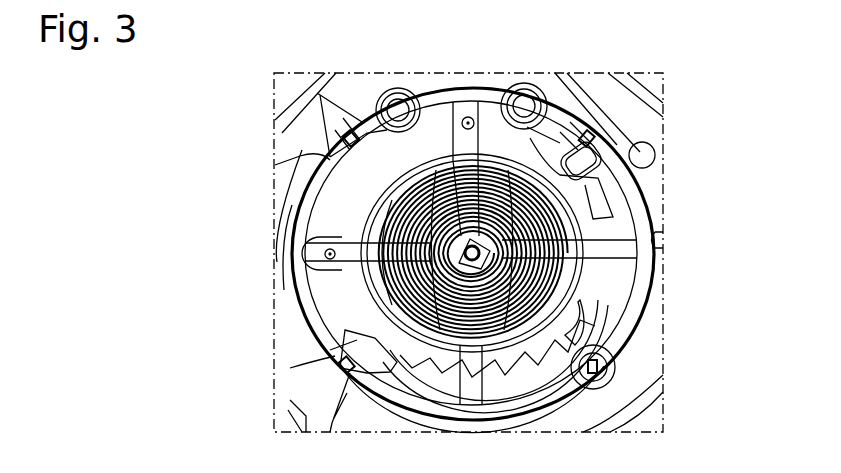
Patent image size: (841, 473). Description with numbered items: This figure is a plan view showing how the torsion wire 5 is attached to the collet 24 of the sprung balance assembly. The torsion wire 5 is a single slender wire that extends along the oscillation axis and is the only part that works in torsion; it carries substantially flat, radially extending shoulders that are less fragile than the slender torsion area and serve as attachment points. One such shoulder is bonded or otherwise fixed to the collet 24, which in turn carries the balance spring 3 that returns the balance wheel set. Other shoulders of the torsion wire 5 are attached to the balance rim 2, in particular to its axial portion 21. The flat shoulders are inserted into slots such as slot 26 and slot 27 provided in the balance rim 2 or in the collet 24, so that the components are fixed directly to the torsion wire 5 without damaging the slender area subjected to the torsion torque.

The balance rim 2 is at (670, 233).
The balance spring 3 is at (610, 278).
The torsion wire 5 is at (472, 245).
The axial portion 21 is at (600, 295).
The collet 24 is at (545, 198).
The slot 26 is at (462, 243).
The slot 27 is at (482, 242).